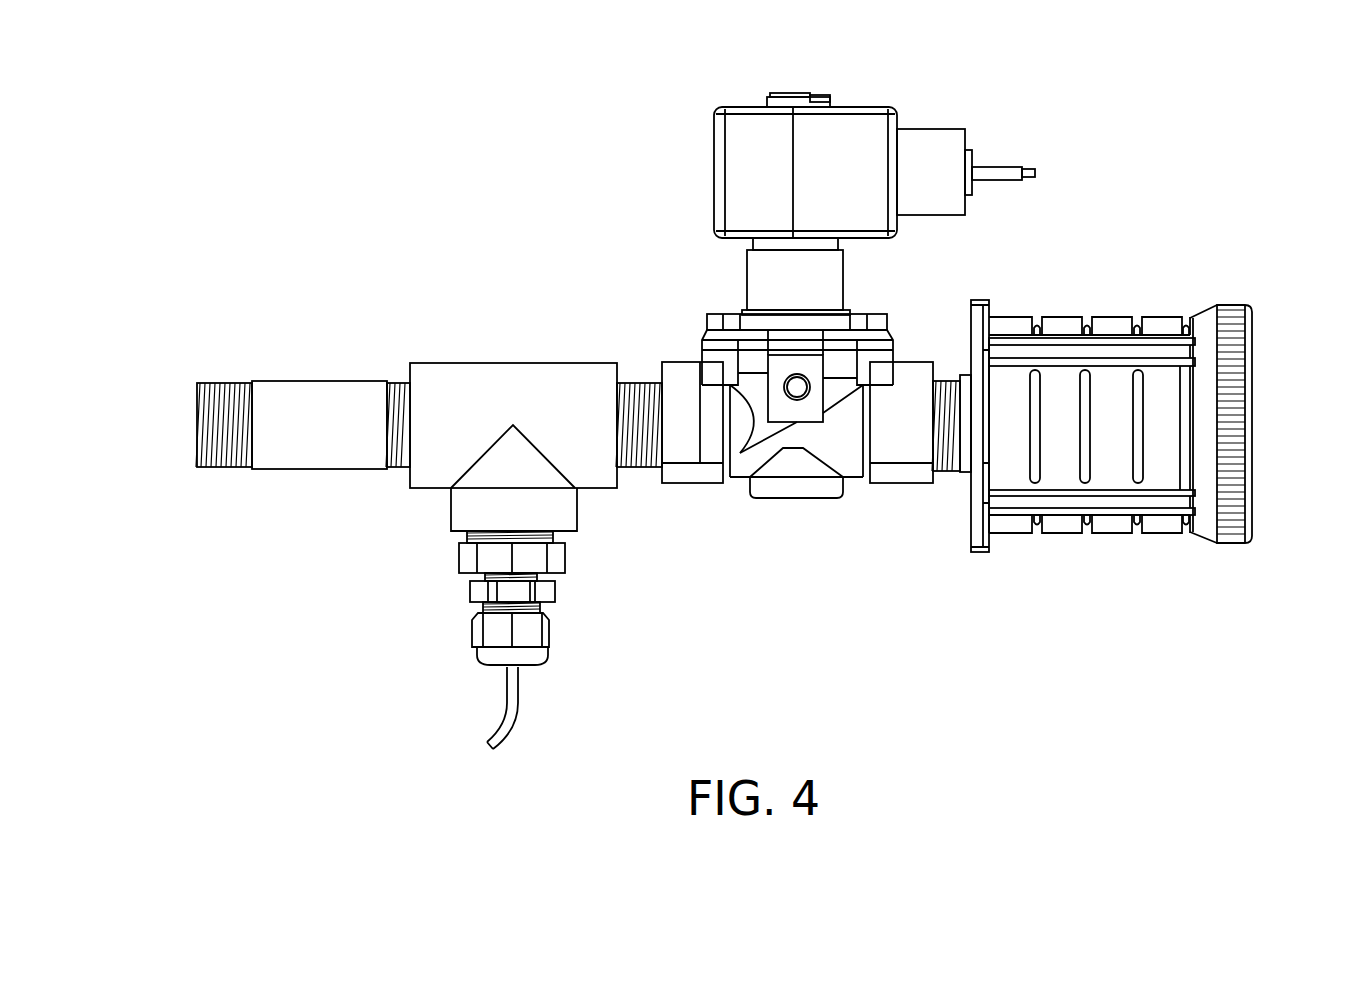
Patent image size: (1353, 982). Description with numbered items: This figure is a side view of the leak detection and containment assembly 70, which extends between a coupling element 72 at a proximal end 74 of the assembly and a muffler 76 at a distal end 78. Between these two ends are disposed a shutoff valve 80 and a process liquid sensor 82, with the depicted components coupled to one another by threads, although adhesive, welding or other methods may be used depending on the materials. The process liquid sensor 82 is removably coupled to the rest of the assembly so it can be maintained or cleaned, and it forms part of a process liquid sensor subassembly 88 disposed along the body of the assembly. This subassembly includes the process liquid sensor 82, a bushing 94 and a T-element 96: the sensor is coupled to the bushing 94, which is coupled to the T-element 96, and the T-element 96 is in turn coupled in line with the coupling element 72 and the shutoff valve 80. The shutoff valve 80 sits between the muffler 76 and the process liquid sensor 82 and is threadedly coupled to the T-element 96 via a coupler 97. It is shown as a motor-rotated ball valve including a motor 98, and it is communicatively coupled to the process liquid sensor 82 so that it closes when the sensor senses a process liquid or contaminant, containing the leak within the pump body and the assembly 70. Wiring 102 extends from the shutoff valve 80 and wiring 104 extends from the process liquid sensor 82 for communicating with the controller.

The leak detection and containment assembly 70 is at (436, 226).
The coupling element 72 is at (292, 453).
The proximal end 74 is at (184, 365).
The muffler 76 is at (1058, 522).
The distal end 78 is at (1238, 274).
The shutoff valve 80 is at (830, 282).
The process liquid sensor 82 is at (532, 658).
The process liquid sensor subassembly 88 is at (558, 346).
The bushing 94 is at (548, 595).
The T-element 96 is at (440, 372).
The coupler 97 is at (640, 470).
The motor 98 is at (742, 135).
The wiring 102 is at (1008, 165).
The wiring 104 is at (498, 725).